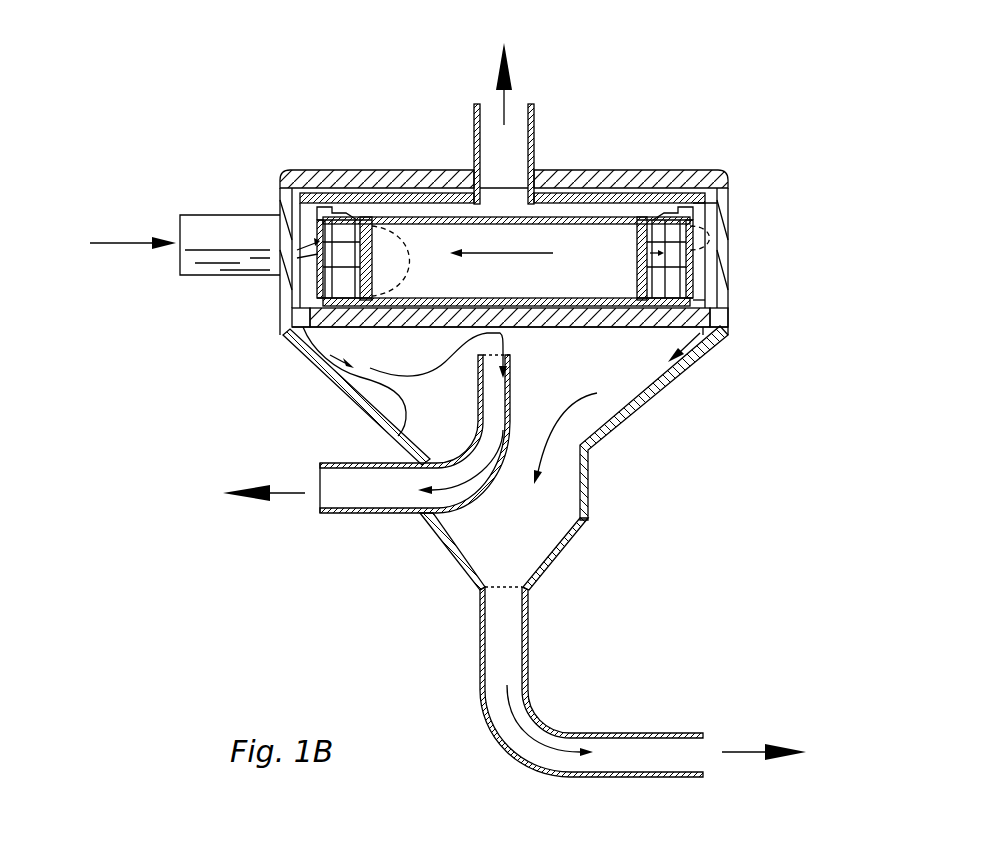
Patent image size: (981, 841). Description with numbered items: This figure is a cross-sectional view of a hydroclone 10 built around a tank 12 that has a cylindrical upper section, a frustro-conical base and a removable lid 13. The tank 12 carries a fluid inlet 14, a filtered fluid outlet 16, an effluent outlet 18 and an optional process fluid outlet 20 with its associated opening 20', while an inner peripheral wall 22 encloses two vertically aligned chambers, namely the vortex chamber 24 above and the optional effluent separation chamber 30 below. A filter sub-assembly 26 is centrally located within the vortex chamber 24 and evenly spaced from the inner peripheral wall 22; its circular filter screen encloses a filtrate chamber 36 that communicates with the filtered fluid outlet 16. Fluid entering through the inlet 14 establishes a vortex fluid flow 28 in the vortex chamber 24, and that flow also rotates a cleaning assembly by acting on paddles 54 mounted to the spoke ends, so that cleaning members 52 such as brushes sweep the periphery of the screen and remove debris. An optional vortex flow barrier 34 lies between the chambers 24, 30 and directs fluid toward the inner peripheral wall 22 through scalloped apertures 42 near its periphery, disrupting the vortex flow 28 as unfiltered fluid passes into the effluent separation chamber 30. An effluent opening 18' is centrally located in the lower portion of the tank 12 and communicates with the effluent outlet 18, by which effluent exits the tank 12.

The hydroclone 10 is at (206, 63).
The tank 12 is at (613, 433).
The removable lid 13 is at (386, 172).
The fluid inlet 14 is at (245, 215).
The filtered fluid outlet 16 is at (534, 140).
The effluent outlet 18 is at (591, 660).
The effluent opening 18' is at (564, 570).
The process fluid outlet 20 is at (347, 461).
The secondary outlet opening 20' is at (347, 413).
The inner peripheral wall 22 is at (333, 382).
The vortex chamber 24 is at (708, 213).
The filter sub-assembly 26 is at (640, 225).
The vortex fluid flow 28 is at (488, 252).
The effluent separation chamber 30 is at (603, 411).
The vortex flow barrier 34 is at (331, 329).
The filtrate chamber 36 is at (592, 237).
The apertures 42 is at (712, 336).
The cleaning member 52 is at (688, 248).
The paddles 54 is at (708, 272).